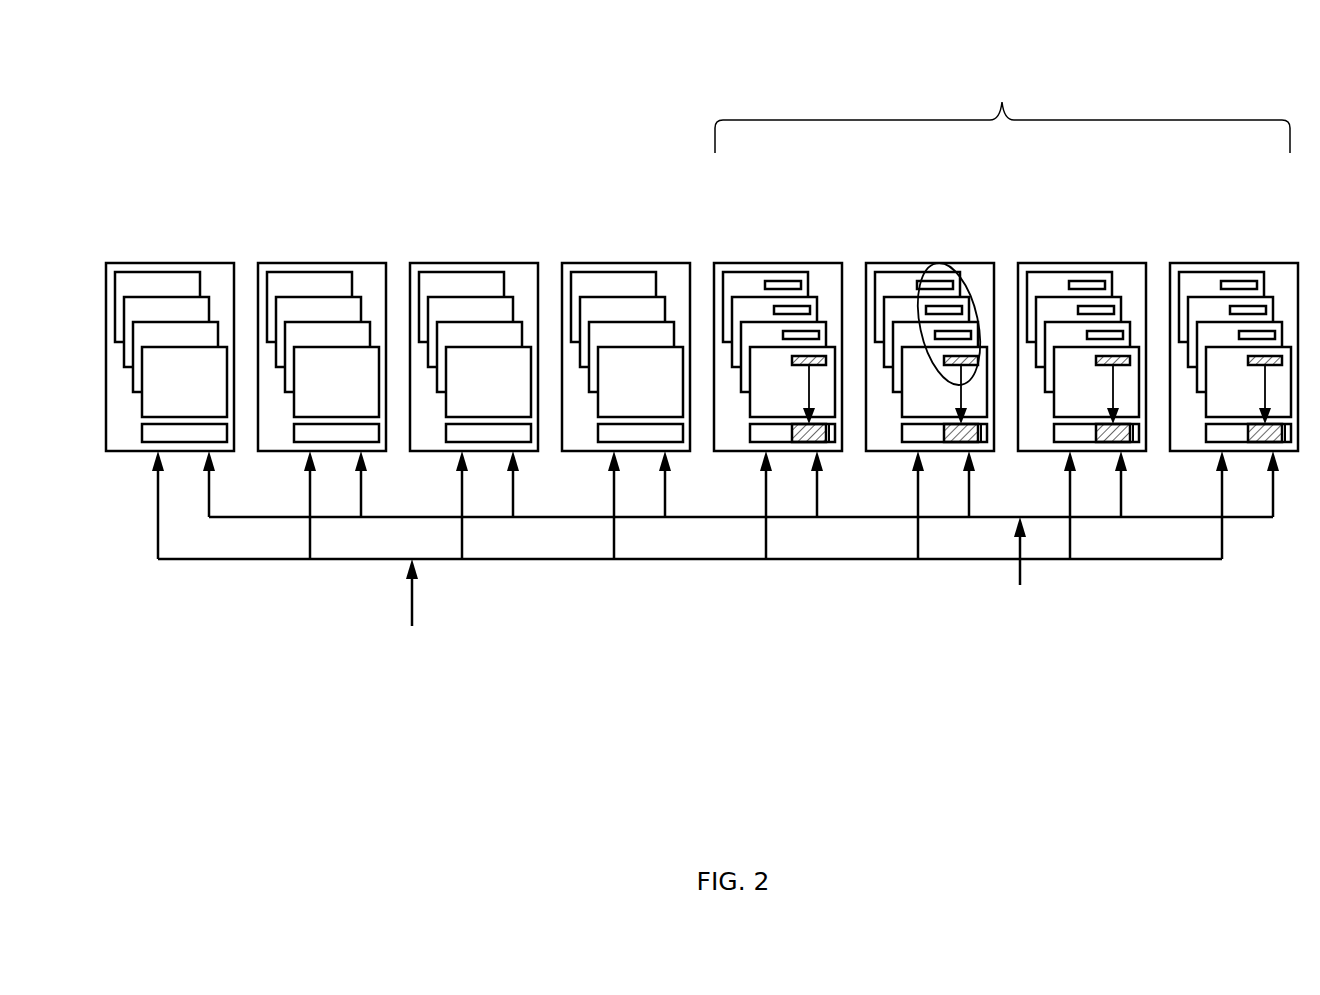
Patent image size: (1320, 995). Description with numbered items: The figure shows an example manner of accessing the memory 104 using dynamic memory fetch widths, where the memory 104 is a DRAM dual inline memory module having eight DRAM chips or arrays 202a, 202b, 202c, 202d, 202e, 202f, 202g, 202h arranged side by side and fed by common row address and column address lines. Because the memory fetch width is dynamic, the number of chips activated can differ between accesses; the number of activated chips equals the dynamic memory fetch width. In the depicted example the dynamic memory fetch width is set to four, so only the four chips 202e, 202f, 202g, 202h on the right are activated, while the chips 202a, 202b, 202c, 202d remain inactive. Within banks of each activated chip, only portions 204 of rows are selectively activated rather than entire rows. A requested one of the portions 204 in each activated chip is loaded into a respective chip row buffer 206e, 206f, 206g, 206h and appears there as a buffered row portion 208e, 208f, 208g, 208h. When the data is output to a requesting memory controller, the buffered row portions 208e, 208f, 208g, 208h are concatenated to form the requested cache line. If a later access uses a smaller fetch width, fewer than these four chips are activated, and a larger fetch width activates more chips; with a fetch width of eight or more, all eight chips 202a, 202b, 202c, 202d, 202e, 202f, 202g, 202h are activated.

The memory 104 is at (685, 365).
The DRAM chip 202a is at (152, 262).
The DRAM chip 202b is at (304, 262).
The DRAM chip 202c is at (456, 262).
The DRAM chip 202d is at (608, 262).
The DRAM chip 202e is at (760, 262).
The DRAM chip 202f is at (912, 262).
The DRAM chip 202g is at (1064, 262).
The DRAM chip 202h is at (1216, 262).
The row portion 204 is at (954, 270).
The chip row buffer 206e is at (767, 463).
The chip row buffer 206f is at (920, 463).
The chip row buffer 206g is at (1068, 458).
The chip row buffer 206h is at (1220, 458).
The buffered row portion 208e is at (773, 548).
The buffered row portion 208f is at (926, 548).
The buffered row portion 208g is at (1118, 557).
The buffered row portion 208h is at (1273, 557).